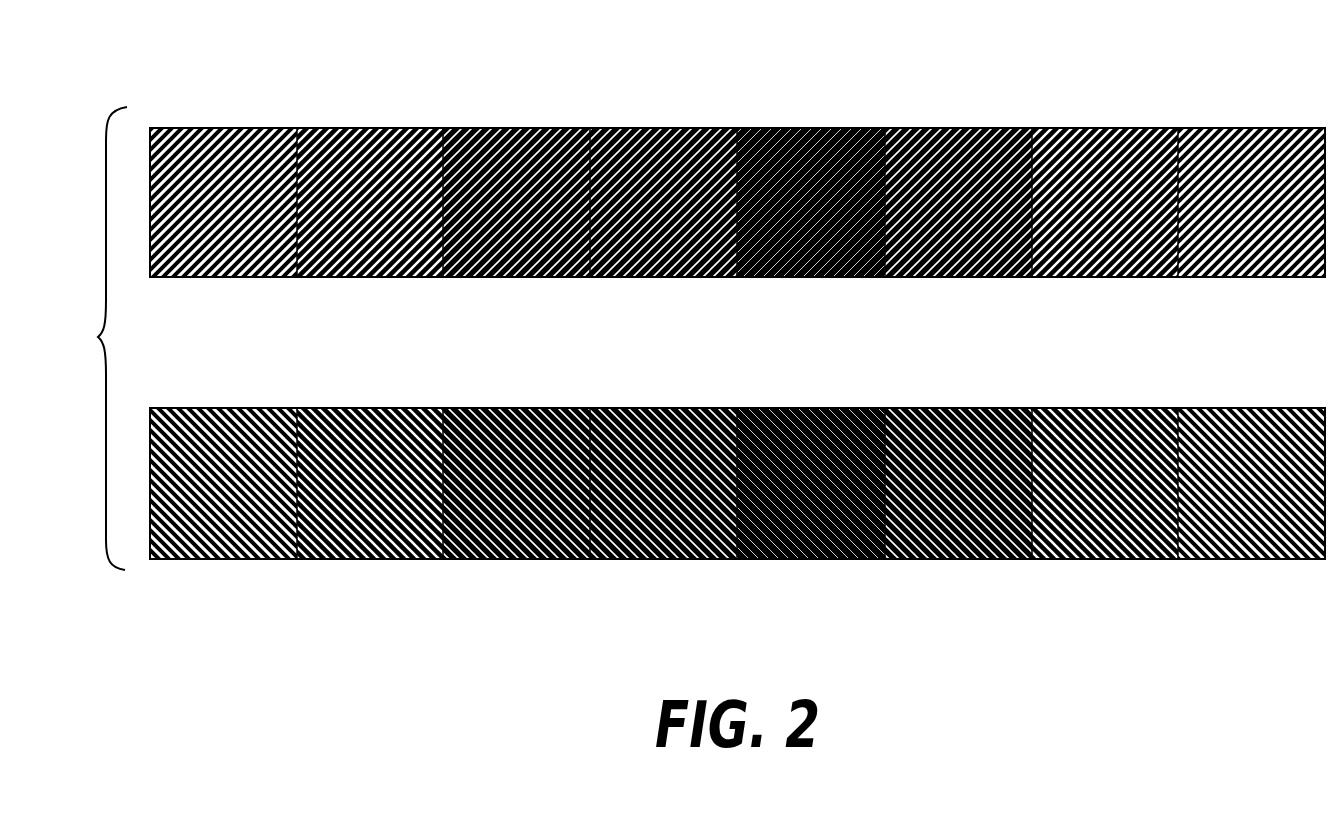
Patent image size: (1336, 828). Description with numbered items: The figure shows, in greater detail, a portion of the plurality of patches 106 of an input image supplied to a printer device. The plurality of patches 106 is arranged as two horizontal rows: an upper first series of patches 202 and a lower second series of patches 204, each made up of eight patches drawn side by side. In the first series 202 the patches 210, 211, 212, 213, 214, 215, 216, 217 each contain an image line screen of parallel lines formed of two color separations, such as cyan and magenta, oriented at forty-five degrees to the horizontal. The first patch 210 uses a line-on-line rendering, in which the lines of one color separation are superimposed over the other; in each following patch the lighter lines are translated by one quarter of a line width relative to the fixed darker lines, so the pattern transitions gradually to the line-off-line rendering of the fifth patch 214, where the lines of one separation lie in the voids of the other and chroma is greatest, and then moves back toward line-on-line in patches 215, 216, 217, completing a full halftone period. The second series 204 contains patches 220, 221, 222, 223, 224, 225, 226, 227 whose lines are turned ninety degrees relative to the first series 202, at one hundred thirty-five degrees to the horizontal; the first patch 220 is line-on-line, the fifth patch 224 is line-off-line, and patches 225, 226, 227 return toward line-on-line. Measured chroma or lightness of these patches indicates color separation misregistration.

The plurality of patches 106 is at (92, 338).
The first series of patches 202 is at (740, 179).
The second series of patches 204 is at (740, 514).
The first patch 210 is at (222, 278).
The second patch 211 is at (365, 278).
The third patch 212 is at (508, 278).
The fourth patch 213 is at (650, 278).
The fifth patch 214 is at (807, 278).
The sixth patch 215 is at (960, 278).
The seventh patch 216 is at (1098, 278).
The eighth patch 217 is at (1253, 278).
The first patch 220 is at (222, 560).
The second patch 221 is at (365, 560).
The third patch 222 is at (508, 560).
The fourth patch 223 is at (650, 560).
The fifth patch 224 is at (807, 560).
The sixth patch 225 is at (960, 560).
The seventh patch 226 is at (1098, 560).
The eighth patch 227 is at (1253, 560).